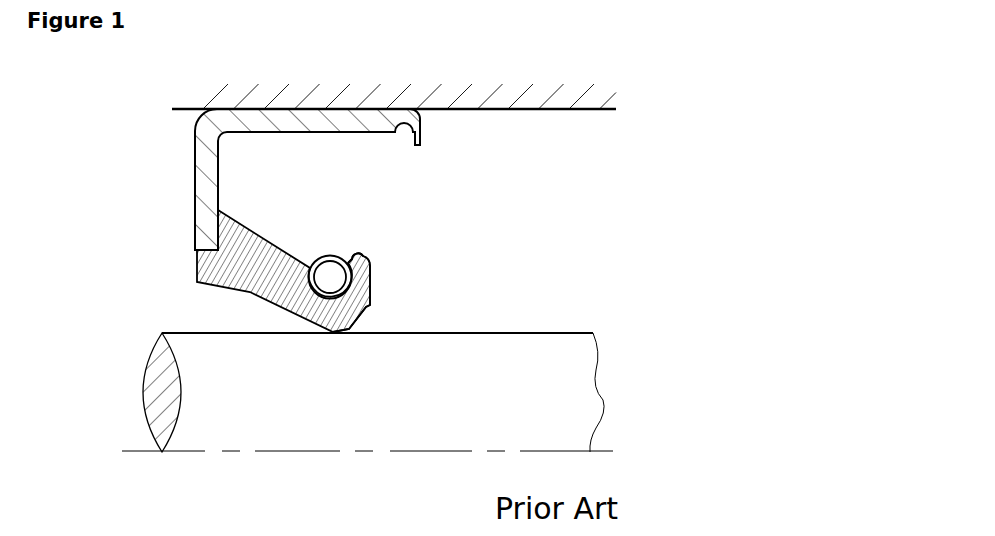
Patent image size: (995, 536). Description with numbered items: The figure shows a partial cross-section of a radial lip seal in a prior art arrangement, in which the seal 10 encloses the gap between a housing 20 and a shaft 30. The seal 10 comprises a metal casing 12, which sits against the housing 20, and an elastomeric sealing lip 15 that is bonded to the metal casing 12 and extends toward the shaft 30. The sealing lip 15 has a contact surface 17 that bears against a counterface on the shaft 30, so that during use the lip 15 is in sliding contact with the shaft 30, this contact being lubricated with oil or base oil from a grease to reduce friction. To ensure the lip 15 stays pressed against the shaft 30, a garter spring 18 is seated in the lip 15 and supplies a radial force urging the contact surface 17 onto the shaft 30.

The seal 10 is at (292, 220).
The metal casing 12 is at (203, 228).
The elastomeric sealing lip 15 is at (265, 262).
The contact surface 17 is at (353, 328).
The garter spring 18 is at (333, 272).
The housing 20 is at (617, 73).
The shaft 30 is at (575, 392).